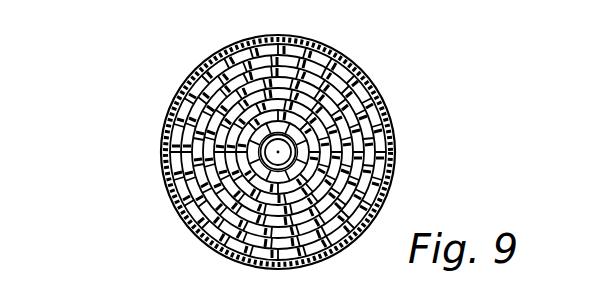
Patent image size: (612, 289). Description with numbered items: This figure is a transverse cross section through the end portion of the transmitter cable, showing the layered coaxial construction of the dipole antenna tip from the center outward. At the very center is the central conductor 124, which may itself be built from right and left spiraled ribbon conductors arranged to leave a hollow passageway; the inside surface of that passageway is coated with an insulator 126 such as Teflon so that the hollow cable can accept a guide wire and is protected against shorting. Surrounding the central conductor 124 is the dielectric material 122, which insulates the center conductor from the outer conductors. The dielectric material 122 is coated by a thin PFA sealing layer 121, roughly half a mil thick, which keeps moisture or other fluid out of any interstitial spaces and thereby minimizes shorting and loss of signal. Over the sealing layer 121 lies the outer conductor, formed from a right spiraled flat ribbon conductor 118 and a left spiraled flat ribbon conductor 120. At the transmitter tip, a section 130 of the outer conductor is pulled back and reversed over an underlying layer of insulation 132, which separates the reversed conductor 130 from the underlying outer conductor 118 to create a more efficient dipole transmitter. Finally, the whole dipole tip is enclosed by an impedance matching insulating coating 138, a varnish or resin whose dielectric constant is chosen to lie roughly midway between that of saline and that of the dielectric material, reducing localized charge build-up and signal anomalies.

The right spiraled flat ribbon conductor 118 is at (235, 62).
The left spiraled flat ribbon conductor 120 is at (225, 92).
The PFA sealing layer 121 is at (235, 118).
The dielectric material 122 is at (240, 150).
The central conductor 124 is at (250, 176).
The insulator 126 is at (265, 178).
The reversed outer conductor section 130 is at (377, 100).
The insulation layer 132 is at (363, 130).
The impedance matching insulating coating 138 is at (398, 170).